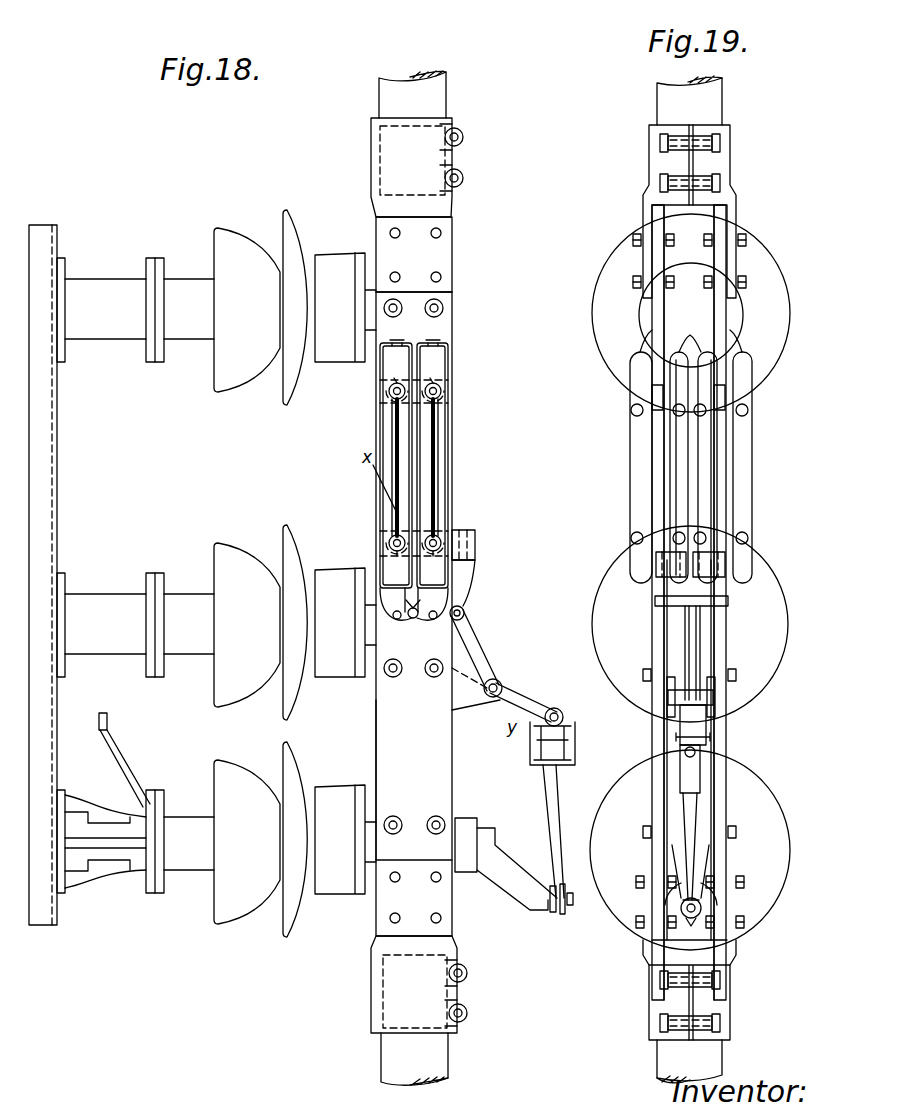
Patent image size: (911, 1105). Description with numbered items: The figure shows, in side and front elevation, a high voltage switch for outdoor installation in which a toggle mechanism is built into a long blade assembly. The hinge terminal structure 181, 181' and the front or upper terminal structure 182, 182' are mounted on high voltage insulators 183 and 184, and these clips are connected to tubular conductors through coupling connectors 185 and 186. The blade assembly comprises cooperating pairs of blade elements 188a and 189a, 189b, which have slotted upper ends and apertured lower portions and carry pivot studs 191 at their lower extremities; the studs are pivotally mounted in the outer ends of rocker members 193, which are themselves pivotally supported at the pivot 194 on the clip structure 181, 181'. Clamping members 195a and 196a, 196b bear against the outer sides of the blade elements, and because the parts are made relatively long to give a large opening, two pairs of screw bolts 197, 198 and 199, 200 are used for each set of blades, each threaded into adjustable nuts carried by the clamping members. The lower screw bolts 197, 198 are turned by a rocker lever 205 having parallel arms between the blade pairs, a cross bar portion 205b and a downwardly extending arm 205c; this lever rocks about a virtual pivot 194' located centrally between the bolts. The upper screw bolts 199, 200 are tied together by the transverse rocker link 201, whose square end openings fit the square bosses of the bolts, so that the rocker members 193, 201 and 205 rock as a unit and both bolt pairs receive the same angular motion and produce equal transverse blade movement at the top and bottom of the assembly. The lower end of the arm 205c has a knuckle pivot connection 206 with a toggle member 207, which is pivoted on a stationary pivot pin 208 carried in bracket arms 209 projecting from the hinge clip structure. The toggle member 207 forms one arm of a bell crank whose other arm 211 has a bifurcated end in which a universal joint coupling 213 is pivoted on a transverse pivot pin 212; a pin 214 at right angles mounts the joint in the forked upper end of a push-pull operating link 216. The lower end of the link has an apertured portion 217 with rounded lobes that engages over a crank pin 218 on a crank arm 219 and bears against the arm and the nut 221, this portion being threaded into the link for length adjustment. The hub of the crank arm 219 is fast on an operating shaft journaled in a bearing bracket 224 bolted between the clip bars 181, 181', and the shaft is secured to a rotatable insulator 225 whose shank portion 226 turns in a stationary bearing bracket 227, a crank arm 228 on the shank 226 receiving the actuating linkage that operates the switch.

In FIG. 18, the hinge terminal structure 181 is at (367, 773).
In FIG. 19, the hinge terminal structure 181 is at (667, 602).
In FIG. 19, the hinge terminal structure 181' is at (760, 602).
In FIG. 18, the front or upper terminal structure 182 is at (446, 283).
In FIG. 19, the front or upper terminal structure 182 is at (633, 602).
In FIG. 19, the front or upper terminal structure 182' is at (753, 602).
In FIG. 18, the high voltage insulator 183 is at (238, 565).
In FIG. 19, the high voltage insulator 183 is at (628, 561).
In FIG. 18, the high voltage insulator 184 is at (240, 248).
In FIG. 19, the high voltage insulator 184 is at (757, 256).
In FIG. 18, the coupling connector 185 is at (371, 1028).
In FIG. 19, the coupling connector 185 is at (733, 1011).
In FIG. 18, the coupling connector 186 is at (376, 147).
In FIG. 19, the coupling connector 186 is at (657, 162).
In FIG. 18, the blade element 188a is at (396, 343).
In FIG. 18, the blade element 189a is at (442, 342).
In FIG. 19, the blade element 189a is at (648, 352).
In FIG. 19, the blade element 189b is at (710, 352).
In FIG. 18, the pivot stud 191 is at (417, 532).
In FIG. 18, the rocker member 193 is at (412, 640).
In FIG. 18, the pivot 194 is at (430, 620).
In FIG. 18, the virtual pivot 194' is at (453, 521).
In FIG. 18, the clamping member 195a is at (387, 439).
In FIG. 18, the clamping member 196a is at (442, 446).
In FIG. 19, the clamping member 196a is at (637, 477).
In FIG. 19, the clamping member 196b is at (702, 477).
In FIG. 18, the screw bolt 197 is at (388, 540).
In FIG. 18, the screw bolt 198 is at (444, 540).
In FIG. 18, the screw bolt 199 is at (388, 390).
In FIG. 18, the screw bolt 200 is at (442, 389).
In FIG. 18, the transverse rocker link 201 is at (420, 378).
In FIG. 19, the transverse rocker link 201 is at (655, 414).
In FIG. 18, the rocker lever 205 is at (463, 541).
In FIG. 19, the rocker lever 205 is at (723, 543).
In FIG. 19, the cross bar portion 205b is at (713, 563).
In FIG. 18, the arm or link portion 205c is at (465, 571).
In FIG. 19, the arm or link portion 205c is at (728, 600).
In FIG. 18, the knuckle pivot connection 206 is at (466, 613).
In FIG. 18, the toggle member 207 is at (478, 647).
In FIG. 19, the toggle member 207 is at (699, 652).
In FIG. 18, the stationary pivot pin 208 is at (500, 690).
In FIG. 19, the stationary pivot pin 208 is at (713, 702).
In FIG. 18, the bracket arms 209 is at (467, 714).
In FIG. 19, the bracket arms 209 is at (667, 692).
In FIG. 18, the arm 211 is at (530, 703).
In FIG. 19, the arm 211 is at (706, 723).
In FIG. 18, the transverse pivot pin 212 is at (563, 715).
In FIG. 19, the transverse pivot pin 212 is at (698, 738).
In FIG. 18, the universal joint coupling 213 is at (575, 742).
In FIG. 19, the universal joint coupling 213 is at (710, 738).
In FIG. 18, the pin 214 is at (531, 732).
In FIG. 19, the pin 214 is at (685, 757).
In FIG. 18, the push-pull operating link 216 is at (547, 803).
In FIG. 19, the push-pull operating link 216 is at (690, 808).
In FIG. 18, the apertured portion 217 is at (552, 915).
In FIG. 19, the apertured portion 217 is at (693, 919).
In FIG. 18, the crank pin 218 is at (575, 902).
In FIG. 19, the crank pin 218 is at (703, 907).
In FIG. 18, the crank arm 219 is at (507, 868).
In FIG. 19, the crank arm 219 is at (703, 865).
In FIG. 18, the nut 221 is at (567, 917).
In FIG. 19, the nut 221 is at (703, 915).
In FIG. 18, the bearing bracket 224 is at (458, 835).
In FIG. 18, the rotatable insulator 225 is at (230, 777).
In FIG. 19, the rotatable insulator 225 is at (775, 823).
In FIG. 18, the shank portion 226 is at (195, 867).
In FIG. 18, the stationary bearing bracket 227 is at (113, 877).
In FIG. 18, the crank arm 228 is at (110, 722).
In FIG. 19, the crank arm 228 is at (625, 770).